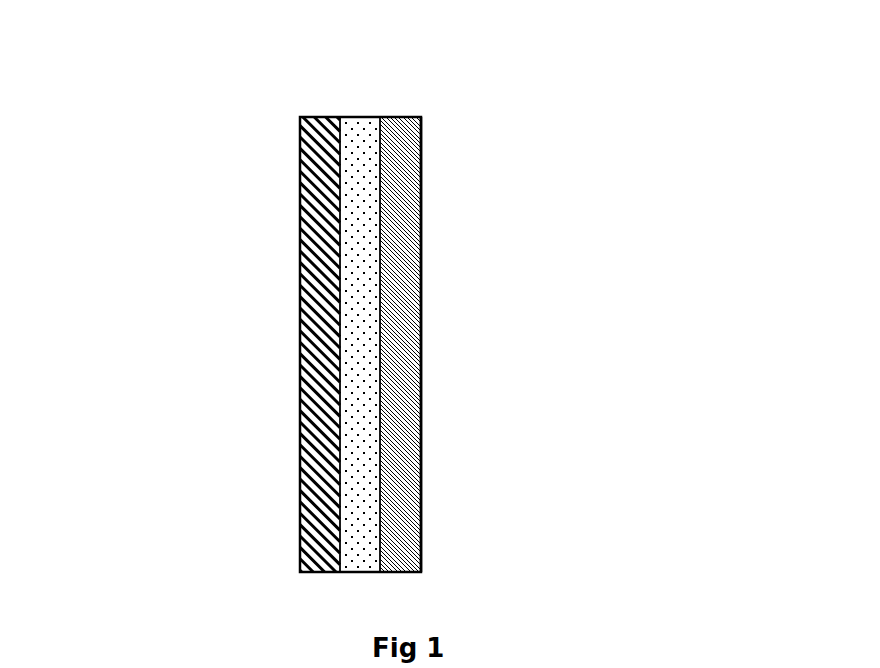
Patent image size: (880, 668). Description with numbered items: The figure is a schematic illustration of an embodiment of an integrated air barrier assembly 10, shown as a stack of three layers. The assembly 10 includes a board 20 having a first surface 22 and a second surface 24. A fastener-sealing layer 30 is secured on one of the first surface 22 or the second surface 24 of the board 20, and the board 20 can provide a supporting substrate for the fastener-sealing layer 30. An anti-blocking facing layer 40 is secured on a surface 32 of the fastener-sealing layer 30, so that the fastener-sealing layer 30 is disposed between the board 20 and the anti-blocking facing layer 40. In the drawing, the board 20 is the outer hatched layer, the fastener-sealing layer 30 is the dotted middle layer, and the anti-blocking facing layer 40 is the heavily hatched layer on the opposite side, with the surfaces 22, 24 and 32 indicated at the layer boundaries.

The integrated air barrier assembly 10 is at (162, 312).
The board 20 is at (404, 386).
The first surface 22 is at (421, 290).
The second surface 24 is at (380, 201).
The fastener-sealing layer 30 is at (366, 167).
The surface of the fastener-sealing layer 32 is at (340, 117).
The anti-blocking facing layer 40 is at (300, 200).